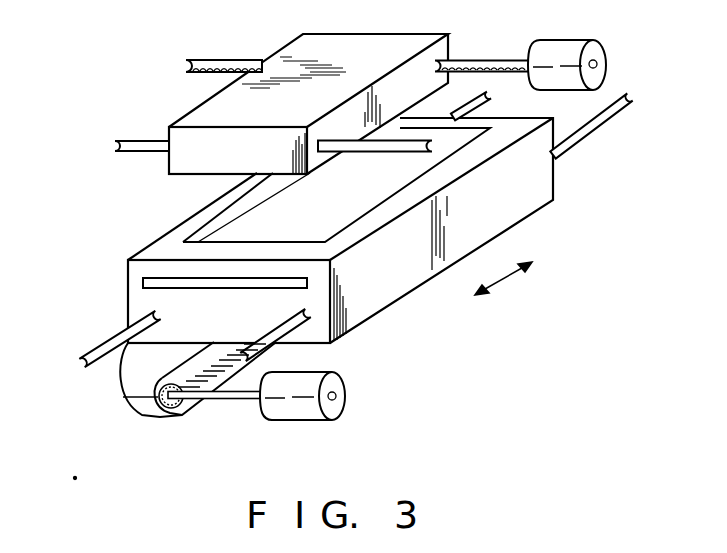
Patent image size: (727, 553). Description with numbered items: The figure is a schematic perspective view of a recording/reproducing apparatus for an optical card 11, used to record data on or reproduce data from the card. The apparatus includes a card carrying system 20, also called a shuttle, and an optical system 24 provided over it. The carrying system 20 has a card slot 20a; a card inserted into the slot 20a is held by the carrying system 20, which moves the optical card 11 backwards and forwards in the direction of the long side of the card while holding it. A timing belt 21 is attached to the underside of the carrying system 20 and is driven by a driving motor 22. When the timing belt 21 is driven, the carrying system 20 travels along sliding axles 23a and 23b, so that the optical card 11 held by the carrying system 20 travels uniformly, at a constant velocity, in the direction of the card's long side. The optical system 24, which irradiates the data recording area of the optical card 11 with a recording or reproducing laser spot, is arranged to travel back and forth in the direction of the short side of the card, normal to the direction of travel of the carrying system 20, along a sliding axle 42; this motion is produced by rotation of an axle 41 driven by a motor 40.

The optical card 11 is at (412, 167).
The card carrying system 20 is at (377, 297).
The card slot 20a is at (143, 283).
The timing belt 21 is at (138, 408).
The driving motor 22 is at (275, 408).
The sliding axle 23a is at (287, 343).
The sliding axle 23b is at (103, 343).
The optical system 24 is at (418, 33).
The motor 40 is at (562, 48).
The axle 41 is at (477, 60).
The sliding axle 42 is at (142, 140).